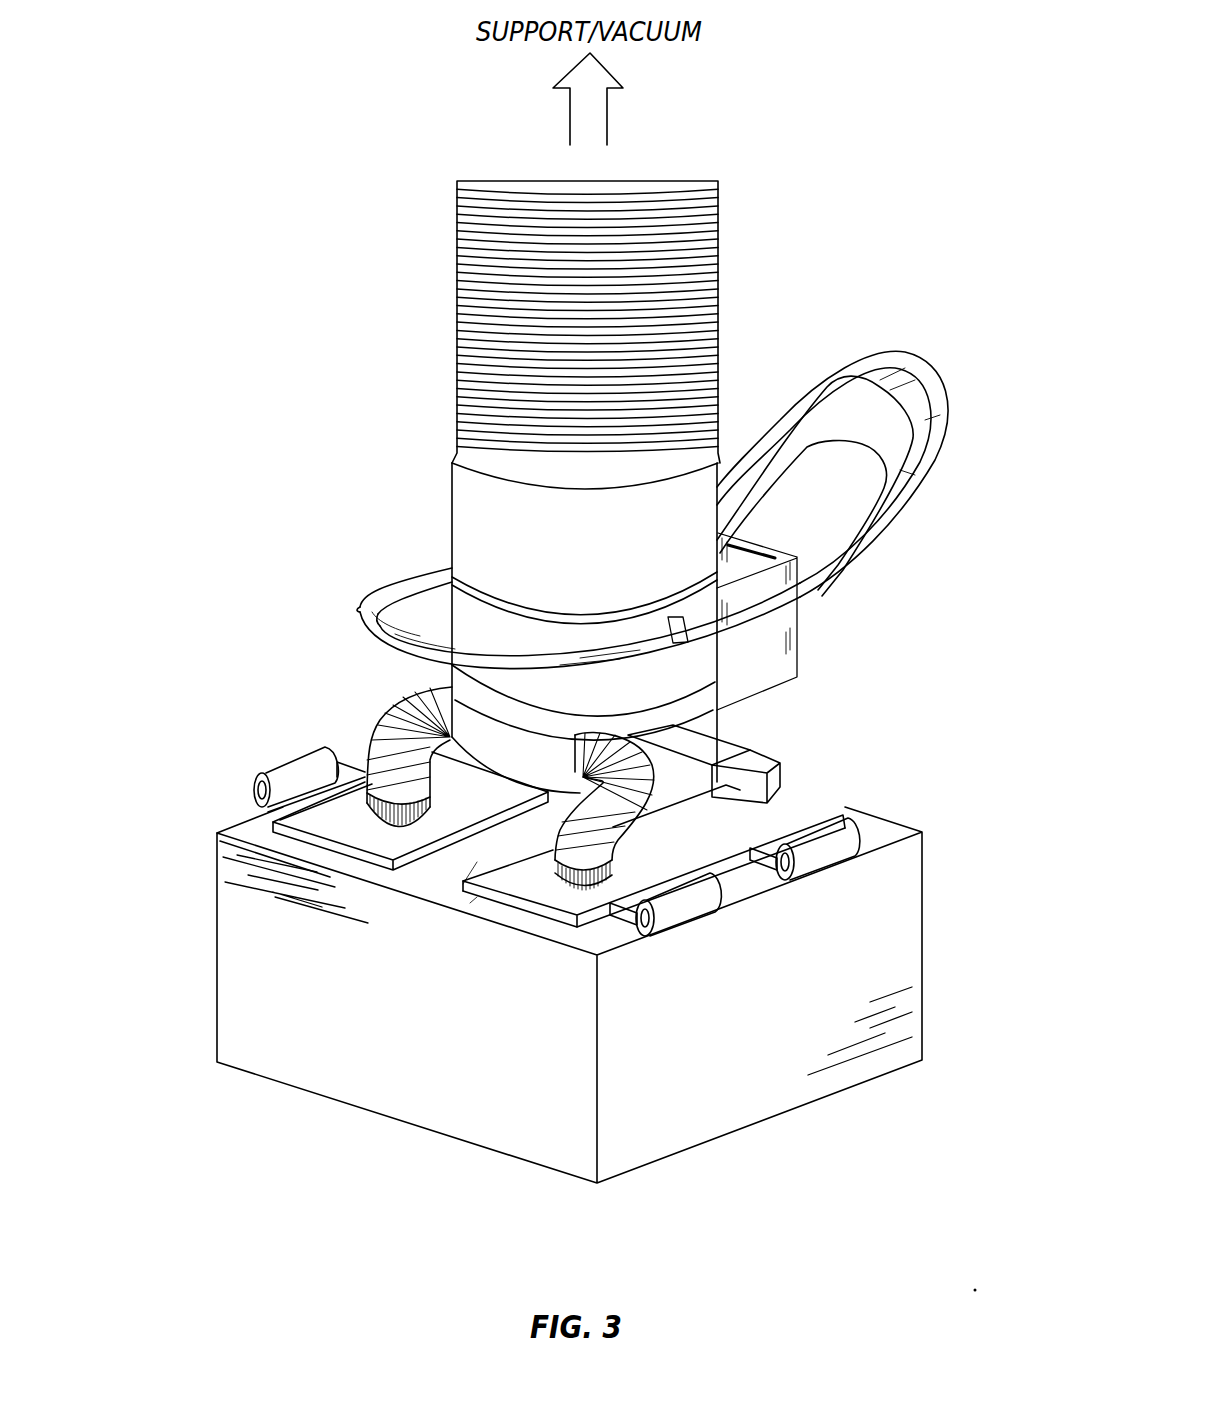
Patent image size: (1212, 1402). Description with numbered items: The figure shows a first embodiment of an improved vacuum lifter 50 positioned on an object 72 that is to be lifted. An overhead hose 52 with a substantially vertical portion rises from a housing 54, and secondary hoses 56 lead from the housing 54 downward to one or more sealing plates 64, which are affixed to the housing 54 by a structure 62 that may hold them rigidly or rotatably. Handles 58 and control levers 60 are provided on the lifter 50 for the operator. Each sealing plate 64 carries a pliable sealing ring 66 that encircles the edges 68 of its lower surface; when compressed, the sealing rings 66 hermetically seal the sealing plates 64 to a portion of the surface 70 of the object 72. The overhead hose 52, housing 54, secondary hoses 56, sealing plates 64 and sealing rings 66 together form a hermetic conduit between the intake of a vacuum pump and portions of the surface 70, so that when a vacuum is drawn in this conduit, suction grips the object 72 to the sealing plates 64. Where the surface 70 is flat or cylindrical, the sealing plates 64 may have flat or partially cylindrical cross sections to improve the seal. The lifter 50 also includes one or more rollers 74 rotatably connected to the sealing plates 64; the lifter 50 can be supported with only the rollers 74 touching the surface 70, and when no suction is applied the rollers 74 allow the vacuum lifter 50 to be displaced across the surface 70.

The vacuum lifter 50 is at (400, 481).
The overhead hose 52 is at (720, 298).
The housing 54 is at (452, 675).
The secondary hoses 56 is at (388, 715).
The handles 58 is at (921, 372).
The control levers 60 is at (876, 385).
The structure 62 is at (790, 764).
The sealing plates 64 is at (348, 827).
The pliable sealing ring 66 is at (540, 886).
The edges 68 is at (478, 863).
The surface 70 is at (243, 837).
The object 72 is at (659, 1140).
The rollers 74 is at (292, 765).